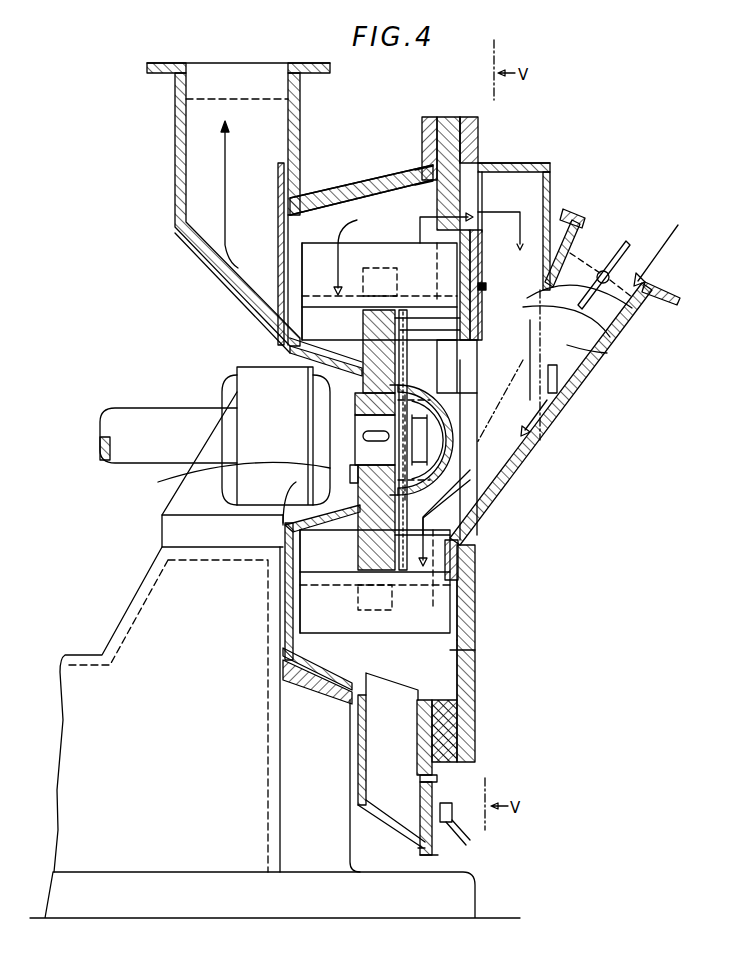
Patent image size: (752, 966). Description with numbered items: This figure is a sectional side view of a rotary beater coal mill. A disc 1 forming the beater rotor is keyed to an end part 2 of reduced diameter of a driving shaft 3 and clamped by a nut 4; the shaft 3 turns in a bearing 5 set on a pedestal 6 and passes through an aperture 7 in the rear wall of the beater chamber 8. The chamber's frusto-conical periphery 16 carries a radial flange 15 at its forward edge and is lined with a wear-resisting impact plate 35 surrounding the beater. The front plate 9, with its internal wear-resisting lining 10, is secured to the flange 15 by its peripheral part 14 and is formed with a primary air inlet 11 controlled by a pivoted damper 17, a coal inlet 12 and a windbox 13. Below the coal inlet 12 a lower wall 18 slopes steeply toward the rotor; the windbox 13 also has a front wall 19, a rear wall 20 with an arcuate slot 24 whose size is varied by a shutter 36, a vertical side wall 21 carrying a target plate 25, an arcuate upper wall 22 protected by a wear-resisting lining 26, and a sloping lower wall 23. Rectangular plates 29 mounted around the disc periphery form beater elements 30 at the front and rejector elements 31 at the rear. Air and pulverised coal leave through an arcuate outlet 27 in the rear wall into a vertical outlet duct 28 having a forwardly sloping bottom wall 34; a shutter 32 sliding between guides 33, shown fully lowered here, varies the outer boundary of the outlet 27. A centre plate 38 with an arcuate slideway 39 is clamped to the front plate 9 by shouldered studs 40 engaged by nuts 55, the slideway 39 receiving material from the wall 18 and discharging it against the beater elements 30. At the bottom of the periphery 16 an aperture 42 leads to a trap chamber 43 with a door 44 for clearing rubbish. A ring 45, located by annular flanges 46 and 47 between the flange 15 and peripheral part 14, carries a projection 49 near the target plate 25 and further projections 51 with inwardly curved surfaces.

The disc 1 is at (327, 361).
The end part of reduced diameter 2 is at (368, 436).
The driving shaft 3 is at (165, 418).
The nut 4 is at (470, 498).
The bearing 5 is at (246, 446).
The pedestal 6 is at (170, 620).
The aperture 7 is at (200, 472).
The beater chamber 8 is at (342, 215).
The front plate 9 is at (477, 621).
The wear resisting lining 10 is at (476, 270).
The primary air inlet 11 is at (588, 353).
The coal inlet 12 is at (560, 393).
The windbox 13 is at (606, 334).
The peripheral part 14 is at (470, 158).
The radial flange 15 is at (431, 128).
The periphery 16 is at (352, 205).
The pivoted damper 17 is at (624, 259).
The lower wall 18 is at (522, 462).
The front wall 19 is at (562, 216).
The rear wall 20 is at (482, 235).
The vertical side wall 21 is at (613, 252).
The arcuate upper wall 22 is at (537, 170).
The sloping lower wall 23 is at (545, 441).
The arcuate slot 24 is at (503, 171).
The target plate 25 is at (515, 193).
The wear resisting lining 26 is at (551, 175).
The arcuate outlet 27 is at (290, 312).
The vertical outlet duct 28 is at (205, 145).
The rectangular plates 29 is at (310, 243).
The beater elements 30 is at (480, 285).
The rejector elements 31 is at (310, 300).
The shutter 32 is at (280, 196).
The guides 33 is at (280, 232).
The forwardly sloping bottom wall 34 is at (235, 272).
The impact plate 35 is at (372, 180).
The shutter 36 is at (482, 254).
The centre plate 38 is at (440, 472).
The arcuate slideway 39 is at (430, 402).
The shouldered studs 40 is at (448, 330).
The aperture 42 is at (440, 692).
The trap chamber 43 is at (400, 800).
The door 44 is at (455, 835).
The ring 45 is at (447, 714).
The annular flange 46 is at (448, 135).
The annular flange 47 is at (461, 134).
The projection 49 is at (424, 173).
The projections 51 is at (457, 372).
The nuts 55 is at (458, 352).